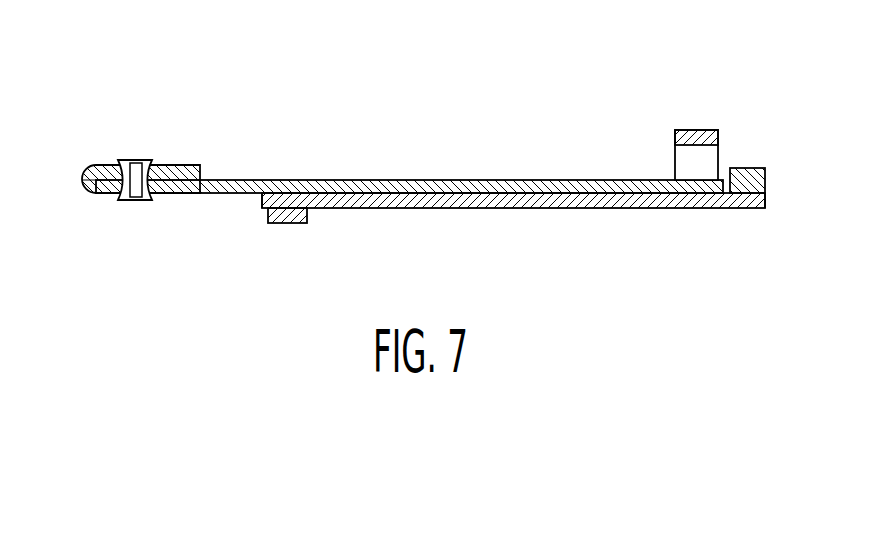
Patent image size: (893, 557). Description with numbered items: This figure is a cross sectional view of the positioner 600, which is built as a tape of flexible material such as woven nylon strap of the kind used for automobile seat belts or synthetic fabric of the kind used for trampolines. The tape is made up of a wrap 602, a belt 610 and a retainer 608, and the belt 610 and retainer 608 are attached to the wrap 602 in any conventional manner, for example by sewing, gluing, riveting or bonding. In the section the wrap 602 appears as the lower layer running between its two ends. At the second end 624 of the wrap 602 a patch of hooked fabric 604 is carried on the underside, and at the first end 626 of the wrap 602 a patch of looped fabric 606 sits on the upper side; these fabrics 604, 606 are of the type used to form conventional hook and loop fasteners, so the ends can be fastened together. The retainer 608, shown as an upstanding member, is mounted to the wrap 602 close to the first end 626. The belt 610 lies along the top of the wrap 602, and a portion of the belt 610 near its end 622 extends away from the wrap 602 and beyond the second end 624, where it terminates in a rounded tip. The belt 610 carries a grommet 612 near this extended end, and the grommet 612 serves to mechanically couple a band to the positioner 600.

The positioner 600 is at (105, 72).
The wrap 602 is at (590, 208).
The hooked fabric 604 is at (290, 224).
The looped fabric 606 is at (752, 168).
The retainer 608 is at (710, 130).
The belt 610 is at (510, 180).
The grommet 612 is at (147, 160).
The end of belt 622 is at (82, 173).
The second end of wrap 624 is at (260, 201).
The first end of wrap 626 is at (765, 202).